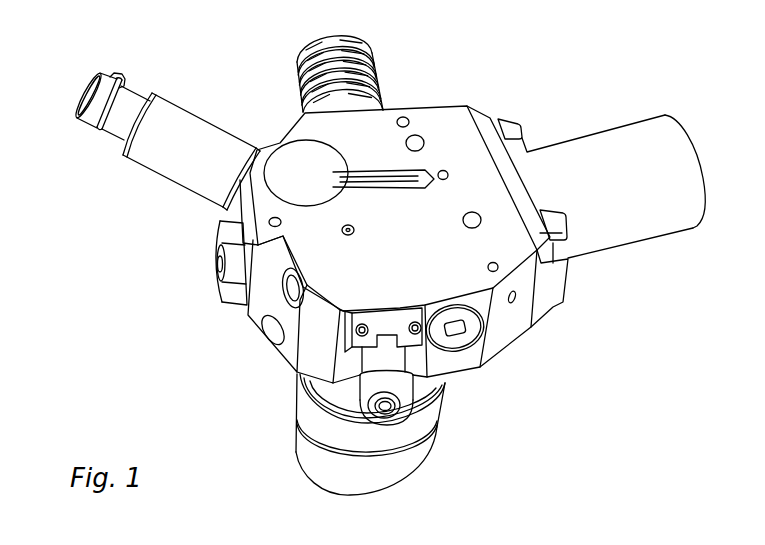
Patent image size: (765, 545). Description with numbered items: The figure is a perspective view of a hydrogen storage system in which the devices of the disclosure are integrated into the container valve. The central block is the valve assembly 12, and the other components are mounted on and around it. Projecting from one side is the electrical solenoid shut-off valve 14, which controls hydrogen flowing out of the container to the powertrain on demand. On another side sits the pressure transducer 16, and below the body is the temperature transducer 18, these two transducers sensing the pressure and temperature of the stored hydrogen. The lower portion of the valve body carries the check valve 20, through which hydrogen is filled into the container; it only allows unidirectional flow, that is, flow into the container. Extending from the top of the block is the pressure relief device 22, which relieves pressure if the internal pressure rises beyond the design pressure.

The valve assembly 12 is at (290, 127).
The electrical solenoid shut-off valve 14 is at (604, 250).
The pressure transducer 16 is at (173, 183).
The temperature transducer 18 is at (445, 402).
The check valve 20 is at (300, 371).
The pressure relief device 22 is at (372, 74).